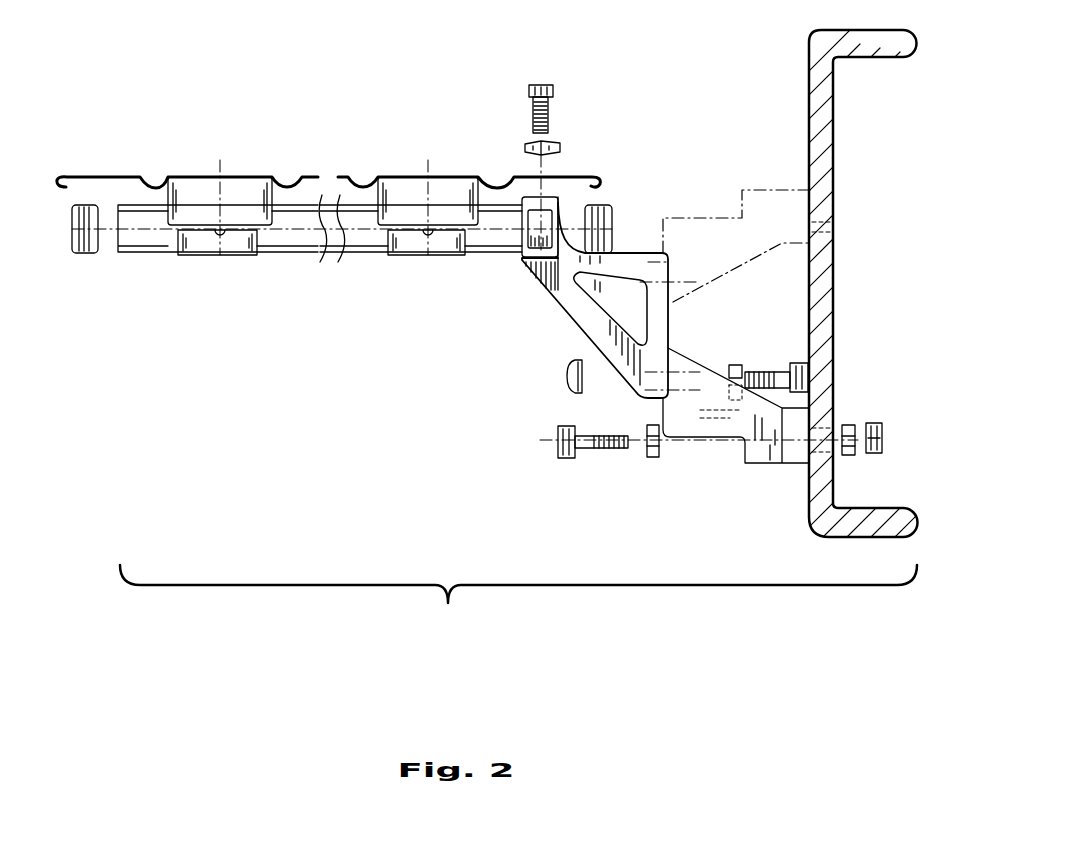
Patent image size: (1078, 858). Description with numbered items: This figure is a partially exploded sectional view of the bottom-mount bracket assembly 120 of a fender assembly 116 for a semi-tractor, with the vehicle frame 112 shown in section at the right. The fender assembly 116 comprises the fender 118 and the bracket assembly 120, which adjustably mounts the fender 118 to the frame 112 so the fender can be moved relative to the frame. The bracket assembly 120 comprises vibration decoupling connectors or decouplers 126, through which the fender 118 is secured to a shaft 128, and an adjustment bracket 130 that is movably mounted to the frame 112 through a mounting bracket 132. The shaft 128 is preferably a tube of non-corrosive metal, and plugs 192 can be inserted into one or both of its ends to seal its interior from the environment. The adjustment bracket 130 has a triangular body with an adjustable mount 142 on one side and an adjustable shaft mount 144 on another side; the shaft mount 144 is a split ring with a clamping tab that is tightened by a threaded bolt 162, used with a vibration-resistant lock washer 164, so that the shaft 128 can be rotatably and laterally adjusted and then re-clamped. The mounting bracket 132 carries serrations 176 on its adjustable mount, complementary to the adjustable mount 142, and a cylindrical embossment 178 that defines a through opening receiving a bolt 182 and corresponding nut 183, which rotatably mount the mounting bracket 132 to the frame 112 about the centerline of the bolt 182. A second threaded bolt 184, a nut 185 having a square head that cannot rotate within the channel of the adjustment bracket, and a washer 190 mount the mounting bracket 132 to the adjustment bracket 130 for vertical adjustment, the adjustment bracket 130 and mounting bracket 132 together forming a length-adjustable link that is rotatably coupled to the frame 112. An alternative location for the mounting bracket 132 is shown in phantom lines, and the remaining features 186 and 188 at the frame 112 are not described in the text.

The frame 112 is at (833, 188).
The fender assembly 116 is at (518, 601).
The fender 118 is at (366, 170).
The bottom-mount bracket assembly 120 is at (510, 360).
The vibration decoupling connectors 126 is at (232, 259).
The shaft 128 is at (498, 203).
The adjustment bracket 130 is at (631, 251).
The mounting bracket 132 is at (244, 176).
The adjustable mount 142 is at (673, 295).
The adjustable shaft mount 144 is at (525, 233).
The threaded bolt 162 is at (530, 85).
The vibration-resistant lock washer 164 is at (549, 140).
The serrations 176 is at (650, 418).
The cylindrical embossment 178 is at (775, 467).
The bolt 182 is at (556, 441).
The nut 183 is at (876, 424).
The threaded bolt 184 is at (774, 374).
The nut 185 is at (572, 366).
The wall opening 186 is at (823, 430).
The wall opening 188 is at (812, 221).
The washer 190 is at (738, 364).
The plugs 192 is at (87, 256).